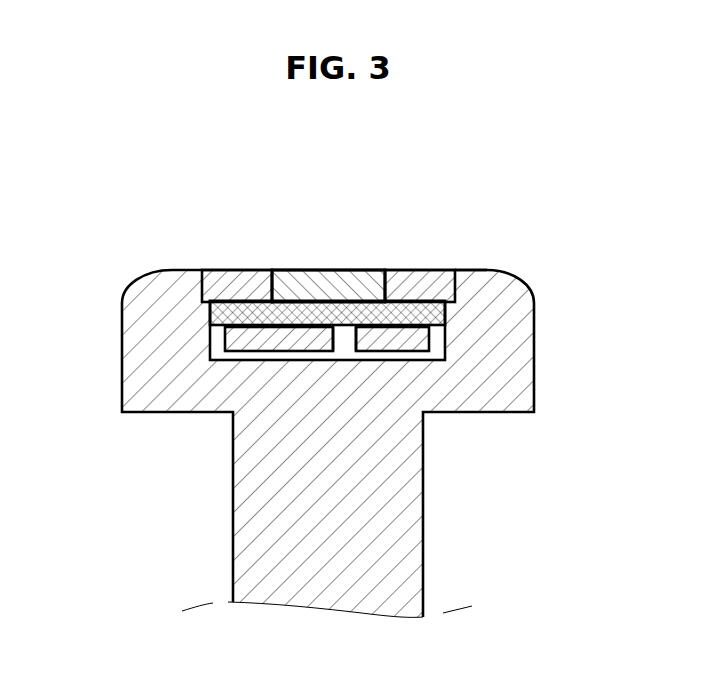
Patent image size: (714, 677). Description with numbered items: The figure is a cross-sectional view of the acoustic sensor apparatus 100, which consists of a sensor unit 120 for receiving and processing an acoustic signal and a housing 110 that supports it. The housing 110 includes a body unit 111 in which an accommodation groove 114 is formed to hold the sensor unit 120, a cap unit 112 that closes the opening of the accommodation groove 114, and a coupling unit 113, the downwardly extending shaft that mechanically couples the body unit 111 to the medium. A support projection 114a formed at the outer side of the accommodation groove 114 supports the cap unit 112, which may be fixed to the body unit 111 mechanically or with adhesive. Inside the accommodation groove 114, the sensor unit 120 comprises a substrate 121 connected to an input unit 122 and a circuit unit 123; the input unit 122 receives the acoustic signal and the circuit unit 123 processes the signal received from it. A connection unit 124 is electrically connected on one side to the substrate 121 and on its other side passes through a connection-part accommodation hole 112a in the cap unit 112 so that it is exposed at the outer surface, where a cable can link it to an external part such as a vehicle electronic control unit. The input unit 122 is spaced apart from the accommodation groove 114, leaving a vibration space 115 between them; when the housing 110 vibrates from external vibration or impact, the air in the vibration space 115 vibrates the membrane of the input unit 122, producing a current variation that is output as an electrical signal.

The acoustic sensor apparatus 100 is at (208, 168).
The housing 110 is at (368, 399).
The body unit 111 is at (512, 378).
The cap unit 112 is at (414, 282).
The connection-part accommodation hole 112a is at (377, 282).
The coupling unit 113 is at (425, 513).
The accommodation groove 114 is at (437, 344).
The support projection 114a is at (467, 278).
The vibration space 115 is at (343, 347).
The sensor unit 120 is at (264, 337).
The substrate 121 is at (211, 315).
The input unit 122 is at (223, 336).
The circuit unit 123 is at (413, 340).
The connection unit 124 is at (303, 282).